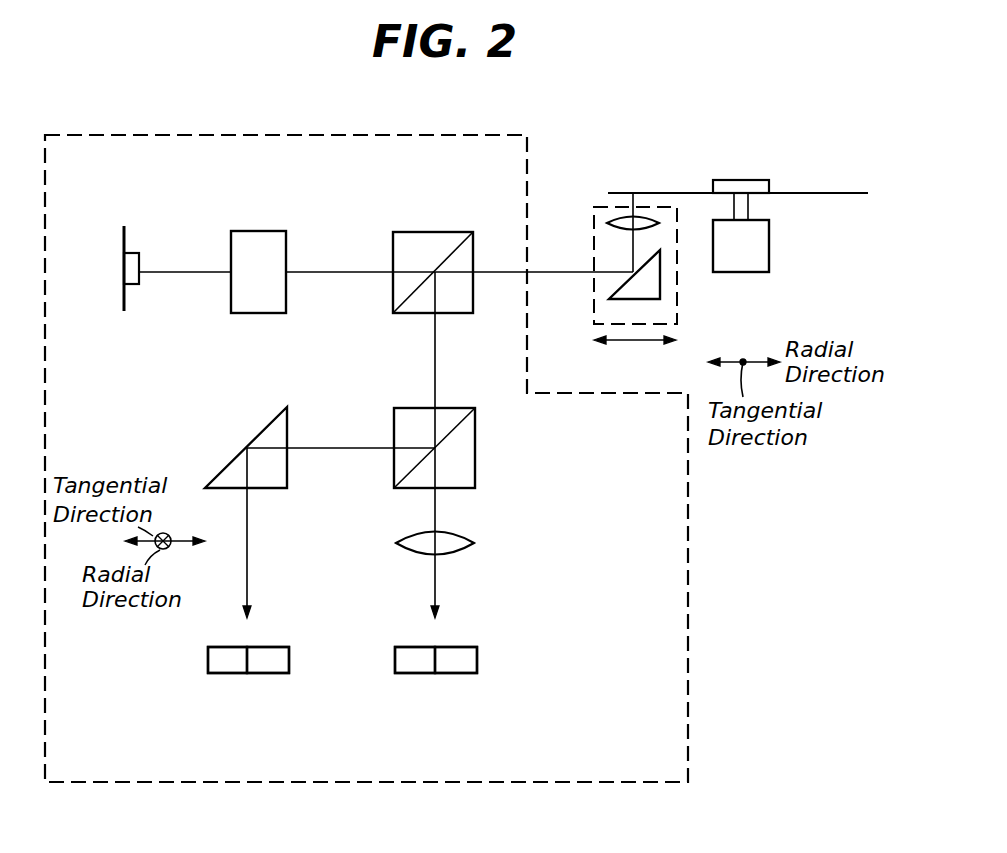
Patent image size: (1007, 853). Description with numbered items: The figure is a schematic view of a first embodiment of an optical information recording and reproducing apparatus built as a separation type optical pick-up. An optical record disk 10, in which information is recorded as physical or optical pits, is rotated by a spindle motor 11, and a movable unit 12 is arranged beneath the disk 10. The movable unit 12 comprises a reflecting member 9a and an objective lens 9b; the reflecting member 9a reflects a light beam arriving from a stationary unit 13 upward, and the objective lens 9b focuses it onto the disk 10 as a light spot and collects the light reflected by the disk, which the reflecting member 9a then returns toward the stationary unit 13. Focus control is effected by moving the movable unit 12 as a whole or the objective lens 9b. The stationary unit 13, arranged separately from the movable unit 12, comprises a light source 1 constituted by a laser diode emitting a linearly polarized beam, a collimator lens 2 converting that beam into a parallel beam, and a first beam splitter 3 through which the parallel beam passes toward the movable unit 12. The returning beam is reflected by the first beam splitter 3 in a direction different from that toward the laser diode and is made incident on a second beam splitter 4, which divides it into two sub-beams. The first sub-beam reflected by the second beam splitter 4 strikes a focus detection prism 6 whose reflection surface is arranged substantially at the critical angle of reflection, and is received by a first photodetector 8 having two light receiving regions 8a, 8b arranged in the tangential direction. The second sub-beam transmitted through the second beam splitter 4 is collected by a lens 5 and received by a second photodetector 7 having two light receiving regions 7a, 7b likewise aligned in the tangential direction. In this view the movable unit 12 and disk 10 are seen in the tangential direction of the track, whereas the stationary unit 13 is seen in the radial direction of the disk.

The light source 1 is at (127, 240).
The collimator lens 2 is at (262, 231).
The first beam splitter 3 is at (434, 232).
The second beam splitter 4 is at (394, 416).
The lens 5 is at (474, 543).
The focus detection prism 6 is at (262, 425).
The second photodetector 7 is at (435, 690).
The light receiving region 7a is at (410, 675).
The light receiving region 7b is at (460, 675).
The first photodetector 8 is at (247, 690).
The light receiving region 8a is at (222, 675).
The light receiving region 8b is at (272, 675).
The reflecting member 9a is at (660, 272).
The objective lens 9b is at (612, 220).
The optical record disk 10 is at (822, 193).
The spindle motor 11 is at (769, 243).
The movable unit 12 is at (677, 300).
The stationary unit 13 is at (510, 782).